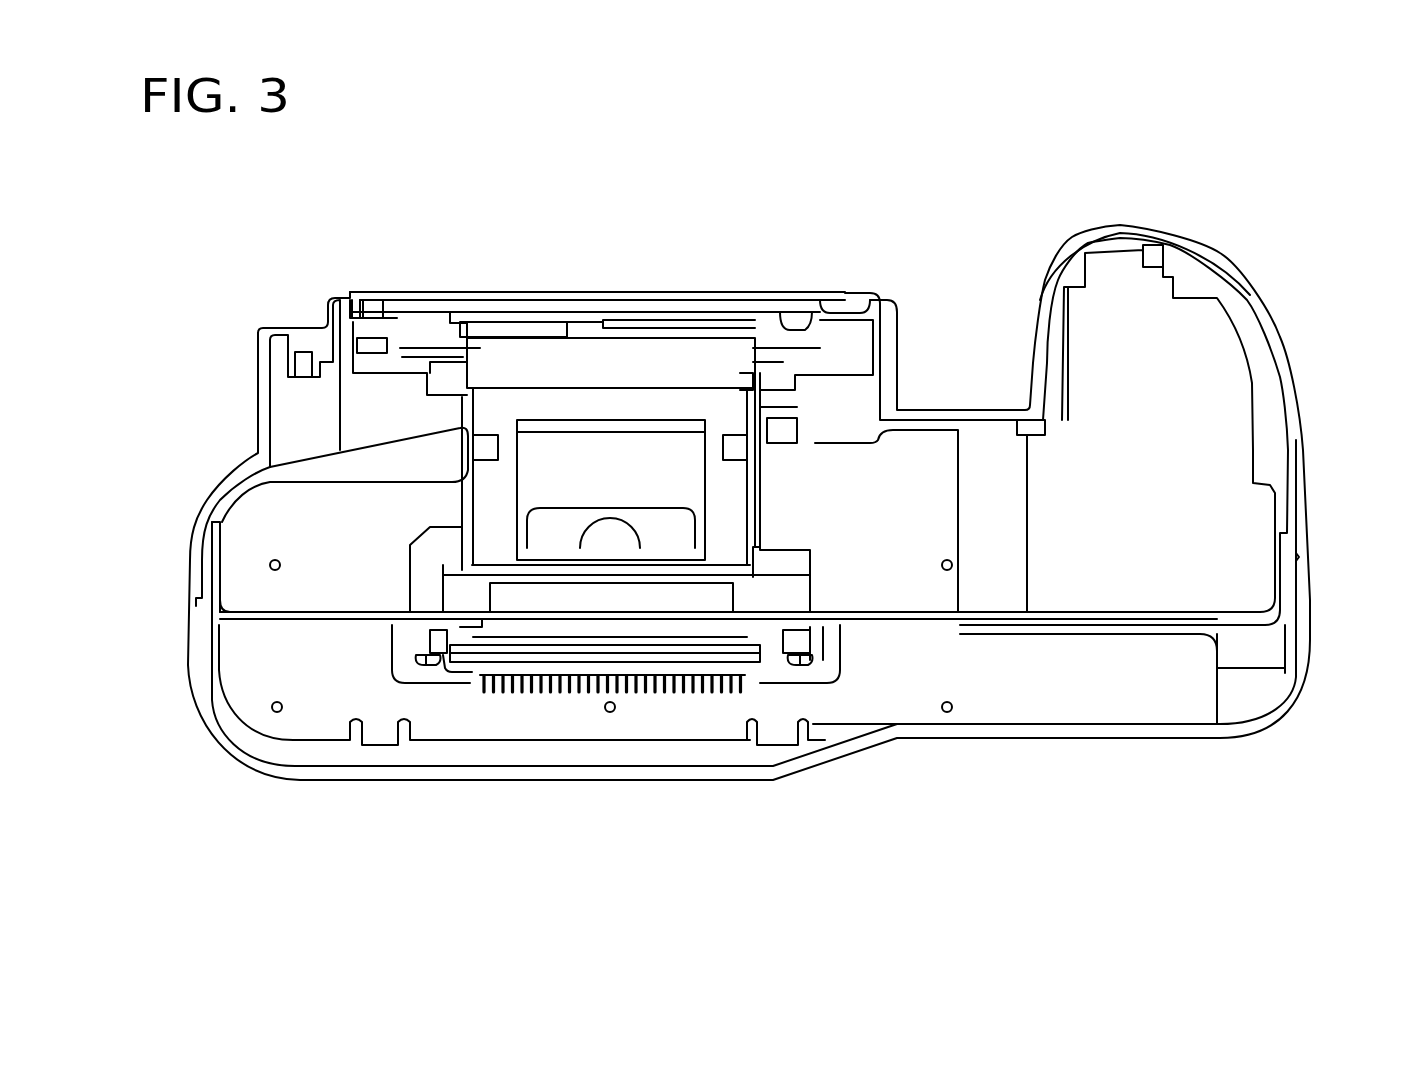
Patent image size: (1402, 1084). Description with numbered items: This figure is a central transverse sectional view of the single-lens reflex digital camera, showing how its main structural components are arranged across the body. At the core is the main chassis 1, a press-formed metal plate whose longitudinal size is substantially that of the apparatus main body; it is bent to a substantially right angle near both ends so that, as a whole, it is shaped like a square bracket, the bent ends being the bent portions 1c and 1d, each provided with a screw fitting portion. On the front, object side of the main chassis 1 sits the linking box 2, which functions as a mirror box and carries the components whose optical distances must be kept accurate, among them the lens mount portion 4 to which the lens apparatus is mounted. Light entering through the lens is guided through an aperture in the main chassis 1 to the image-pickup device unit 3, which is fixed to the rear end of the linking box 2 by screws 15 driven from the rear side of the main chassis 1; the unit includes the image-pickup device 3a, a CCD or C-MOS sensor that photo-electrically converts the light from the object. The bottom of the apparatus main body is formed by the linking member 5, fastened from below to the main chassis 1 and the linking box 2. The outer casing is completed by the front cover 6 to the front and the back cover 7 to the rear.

The main chassis 1 is at (897, 622).
The bent portion 1c is at (1281, 580).
The bent portion 1d is at (218, 565).
The linking box 2 is at (858, 346).
The image-pickup device unit 3 is at (472, 662).
The image-pickup device 3a is at (670, 655).
The lens mount portion 4 is at (838, 300).
The linking member 5 is at (298, 720).
The front cover 6 is at (1112, 233).
The back cover 7 is at (1113, 724).
The screws 15 is at (427, 666).